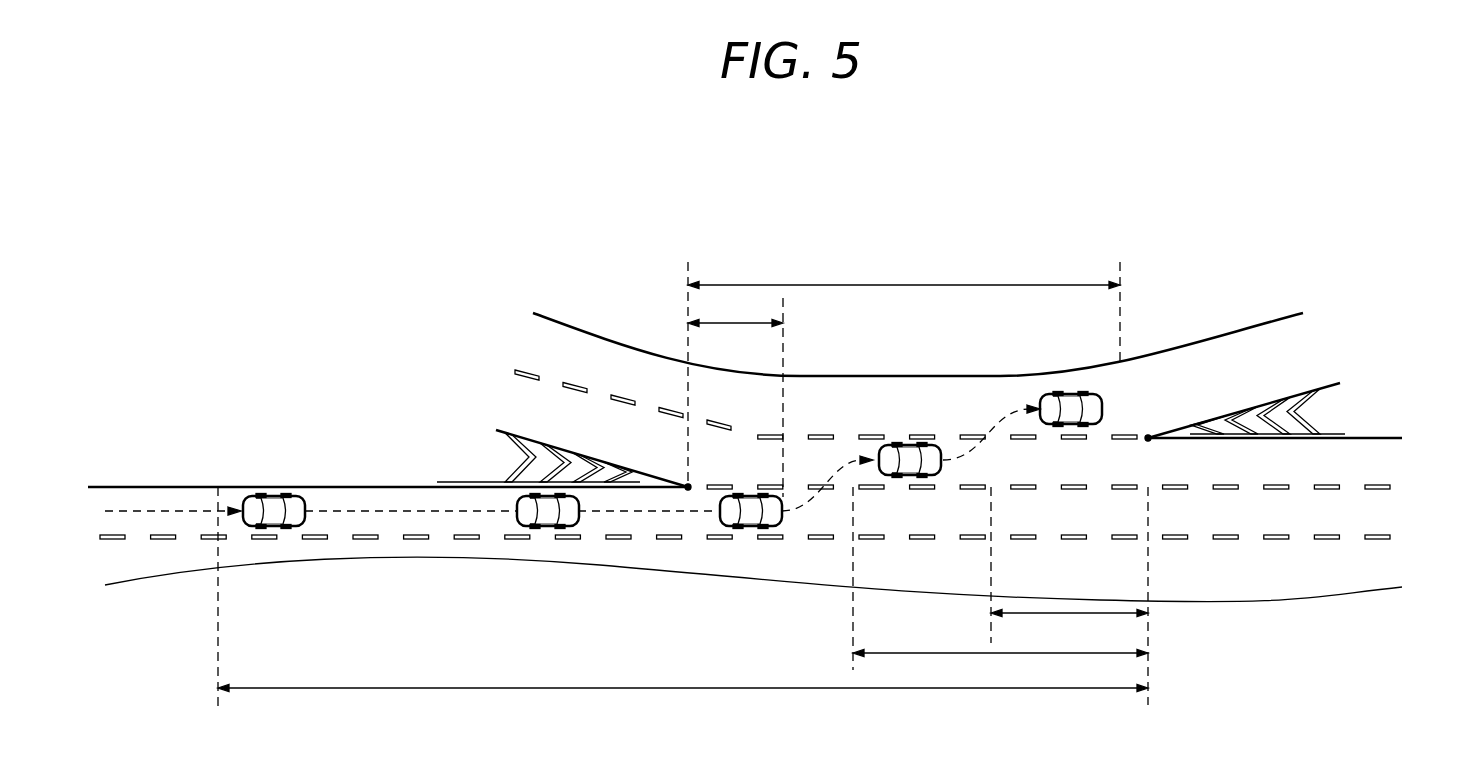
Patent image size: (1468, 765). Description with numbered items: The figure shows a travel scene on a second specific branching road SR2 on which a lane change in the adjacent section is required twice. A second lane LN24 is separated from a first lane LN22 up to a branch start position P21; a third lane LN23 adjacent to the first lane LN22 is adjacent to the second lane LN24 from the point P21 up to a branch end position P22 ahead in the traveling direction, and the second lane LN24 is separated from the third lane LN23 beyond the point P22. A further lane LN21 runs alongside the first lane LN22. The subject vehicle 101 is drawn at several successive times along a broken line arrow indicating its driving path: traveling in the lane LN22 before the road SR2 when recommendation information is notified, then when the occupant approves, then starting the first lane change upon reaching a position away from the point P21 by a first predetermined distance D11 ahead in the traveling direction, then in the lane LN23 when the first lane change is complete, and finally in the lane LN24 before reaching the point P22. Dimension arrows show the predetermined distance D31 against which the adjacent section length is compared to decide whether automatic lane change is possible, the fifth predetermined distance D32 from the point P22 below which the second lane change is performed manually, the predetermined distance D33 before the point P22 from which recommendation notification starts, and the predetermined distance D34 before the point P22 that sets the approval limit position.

The subject vehicle 101 is at (274, 496).
The branch start position P21 is at (688, 487).
The branch end position P22 is at (1148, 438).
The lane LN21 is at (1352, 572).
The first lane LN22 is at (1352, 522).
The third lane LN23 is at (1352, 472).
The second lane LN24 is at (1262, 340).
The second specific branching road SR2 is at (1163, 204).
The first predetermined distance D11 is at (735, 314).
The predetermined distance D31 is at (904, 276).
The fifth predetermined distance D32 is at (1069, 628).
The predetermined distance D33 is at (683, 702).
The predetermined distance D34 is at (1000, 667).